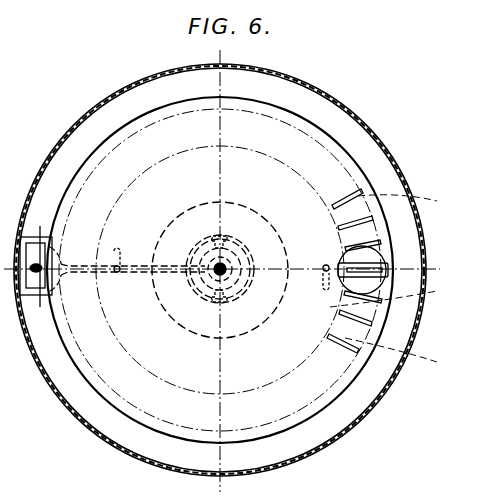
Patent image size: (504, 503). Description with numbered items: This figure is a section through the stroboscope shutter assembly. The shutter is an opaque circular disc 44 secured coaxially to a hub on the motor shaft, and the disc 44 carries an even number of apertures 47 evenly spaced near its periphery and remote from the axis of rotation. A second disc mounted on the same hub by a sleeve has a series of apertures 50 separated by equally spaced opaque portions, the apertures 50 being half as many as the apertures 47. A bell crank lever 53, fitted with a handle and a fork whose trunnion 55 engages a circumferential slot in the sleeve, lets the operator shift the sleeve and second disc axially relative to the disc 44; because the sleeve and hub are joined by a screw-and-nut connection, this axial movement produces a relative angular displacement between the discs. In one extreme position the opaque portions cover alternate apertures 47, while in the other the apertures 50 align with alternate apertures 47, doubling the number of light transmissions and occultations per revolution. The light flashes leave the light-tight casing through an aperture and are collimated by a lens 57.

The circular disc 44 is at (302, 418).
The apertures 47 is at (355, 247).
The apertures 50 is at (393, 281).
The bell crank lever 53 is at (120, 273).
The trunnion 55 is at (231, 243).
The lens 57 is at (389, 251).